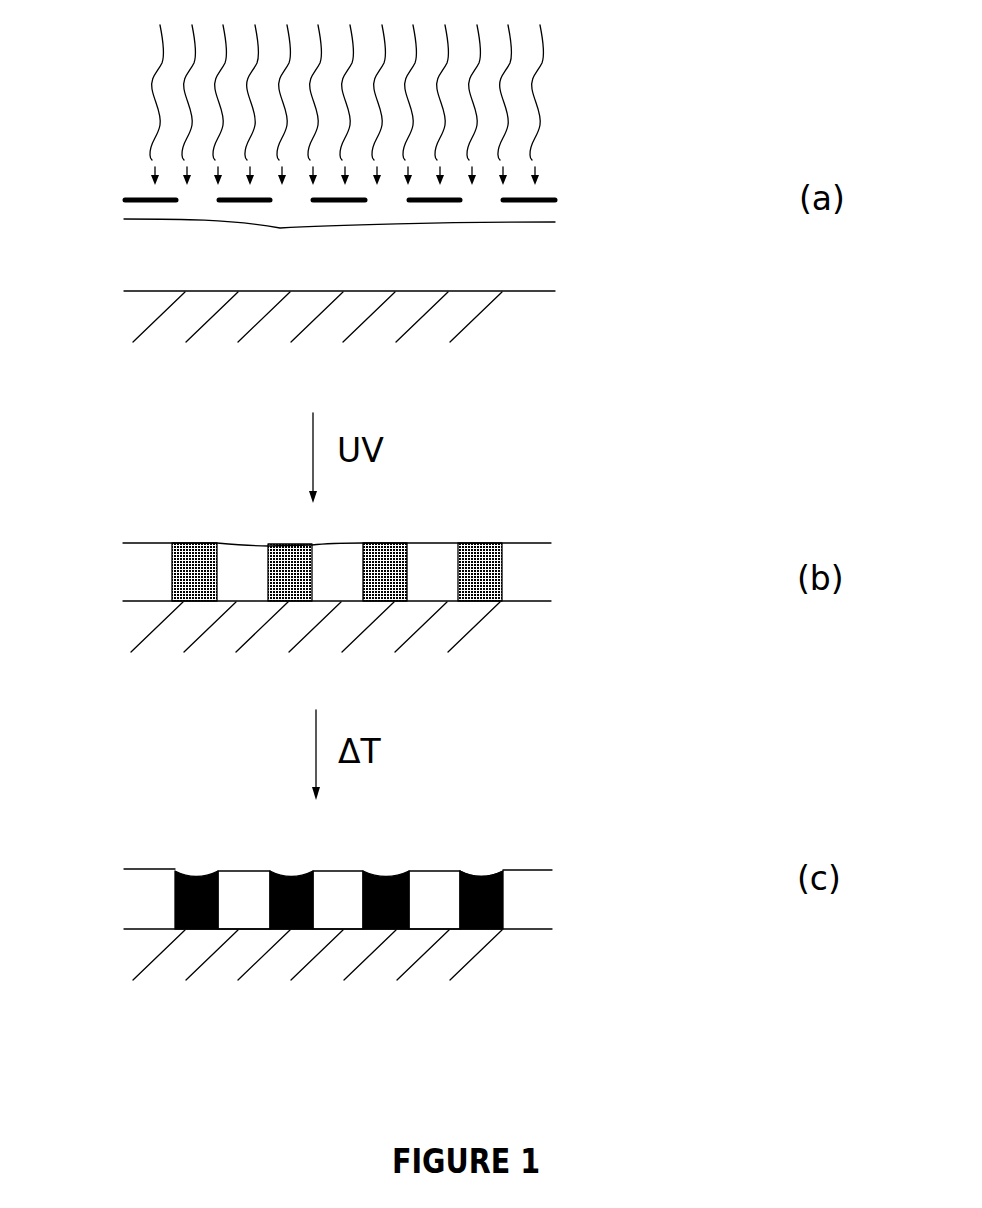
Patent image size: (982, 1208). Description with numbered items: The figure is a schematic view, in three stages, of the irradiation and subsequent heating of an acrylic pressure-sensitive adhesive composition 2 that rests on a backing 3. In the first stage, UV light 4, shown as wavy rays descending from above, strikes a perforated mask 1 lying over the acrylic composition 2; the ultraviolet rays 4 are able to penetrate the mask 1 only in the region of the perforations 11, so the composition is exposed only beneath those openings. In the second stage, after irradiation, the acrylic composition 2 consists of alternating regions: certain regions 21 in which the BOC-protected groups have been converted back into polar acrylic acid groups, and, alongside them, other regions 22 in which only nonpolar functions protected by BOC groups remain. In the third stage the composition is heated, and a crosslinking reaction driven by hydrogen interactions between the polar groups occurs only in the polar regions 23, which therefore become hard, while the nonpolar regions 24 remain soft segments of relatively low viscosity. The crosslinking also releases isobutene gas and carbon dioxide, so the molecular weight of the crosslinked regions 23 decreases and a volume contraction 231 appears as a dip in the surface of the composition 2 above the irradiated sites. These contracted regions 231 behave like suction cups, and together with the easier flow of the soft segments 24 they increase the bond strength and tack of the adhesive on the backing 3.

The perforated mask 1 is at (593, 200).
The perforations 11 is at (195, 200).
The acrylic composition 2 is at (600, 264).
The backing 3 is at (598, 333).
The UV light 4 is at (592, 104).
The regions with polar groups 21 is at (168, 577).
The regions with nonpolar functions 22 is at (232, 538).
The polar crosslinked regions 23 is at (170, 902).
The nonpolar soft regions 24 is at (237, 867).
The volume contraction 231 is at (591, 825).